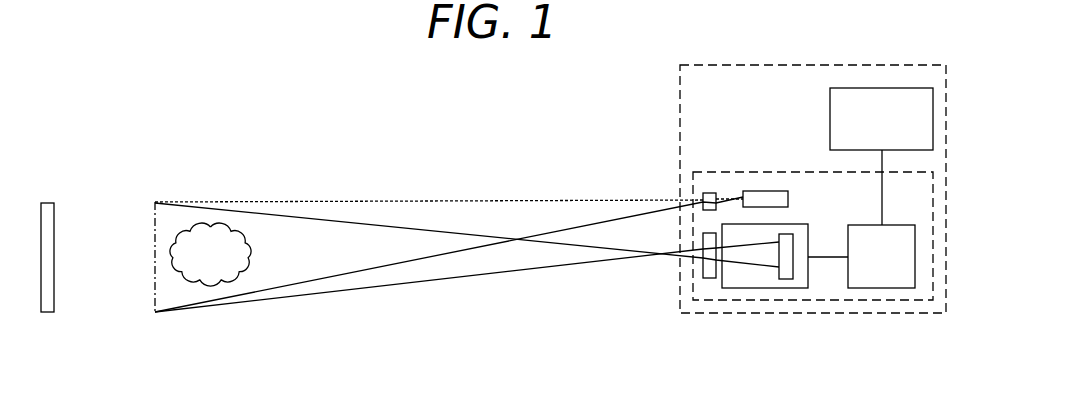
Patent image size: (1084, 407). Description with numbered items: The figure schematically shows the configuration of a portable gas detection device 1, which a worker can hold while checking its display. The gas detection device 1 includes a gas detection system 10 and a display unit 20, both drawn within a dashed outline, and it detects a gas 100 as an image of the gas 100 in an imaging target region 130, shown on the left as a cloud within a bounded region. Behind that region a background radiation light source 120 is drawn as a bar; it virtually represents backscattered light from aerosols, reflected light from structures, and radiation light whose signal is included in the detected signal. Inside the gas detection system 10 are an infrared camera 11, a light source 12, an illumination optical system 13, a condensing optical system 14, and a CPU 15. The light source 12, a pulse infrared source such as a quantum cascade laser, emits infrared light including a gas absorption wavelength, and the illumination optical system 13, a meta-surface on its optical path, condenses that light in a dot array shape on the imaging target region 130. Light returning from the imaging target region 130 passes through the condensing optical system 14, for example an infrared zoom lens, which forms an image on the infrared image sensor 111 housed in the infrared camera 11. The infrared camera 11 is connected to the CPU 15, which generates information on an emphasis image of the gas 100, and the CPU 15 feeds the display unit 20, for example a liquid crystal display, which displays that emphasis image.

The gas detection device 1 is at (750, 62).
The gas detection system 10 is at (912, 300).
The infrared camera 11 is at (751, 288).
The infrared image sensor 111 is at (786, 279).
The light source 12 is at (764, 190).
The illumination optical system 13 is at (709, 190).
The condensing optical system 14 is at (709, 279).
The CPU 15 is at (883, 288).
The display unit 20 is at (882, 88).
The gas 100 is at (215, 222).
The background radiation light source 120 is at (49, 202).
The imaging target region 130 is at (153, 295).